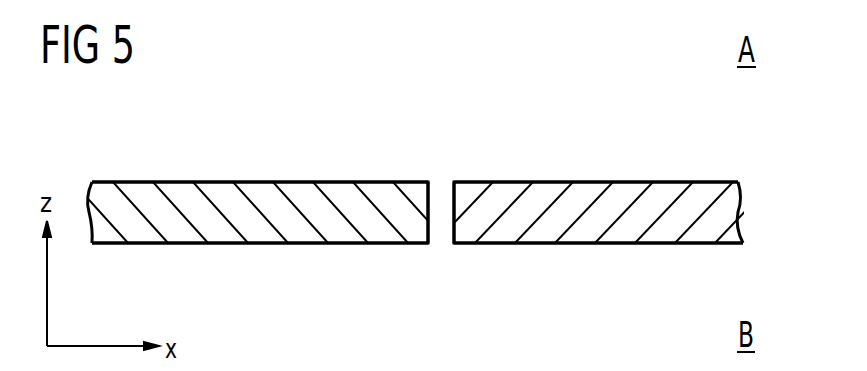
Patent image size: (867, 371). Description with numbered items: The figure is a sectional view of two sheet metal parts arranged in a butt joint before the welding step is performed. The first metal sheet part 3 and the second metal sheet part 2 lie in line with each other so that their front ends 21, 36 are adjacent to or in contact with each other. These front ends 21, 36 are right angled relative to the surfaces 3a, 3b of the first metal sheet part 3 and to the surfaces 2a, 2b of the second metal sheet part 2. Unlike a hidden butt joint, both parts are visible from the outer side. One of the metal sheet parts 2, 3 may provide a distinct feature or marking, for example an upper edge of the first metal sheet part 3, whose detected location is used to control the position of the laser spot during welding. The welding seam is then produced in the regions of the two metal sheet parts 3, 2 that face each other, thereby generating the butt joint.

The second metal sheet part 2 is at (622, 205).
The surface of second metal sheet part 2a is at (553, 244).
The surface of second metal sheet part 2b is at (552, 181).
The front end of first metal sheet part 21 is at (457, 212).
The first metal sheet part 3 is at (285, 217).
The surface of first metal sheet part 3a is at (220, 244).
The surface of first metal sheet part 3b is at (218, 181).
The front end 36 is at (427, 215).